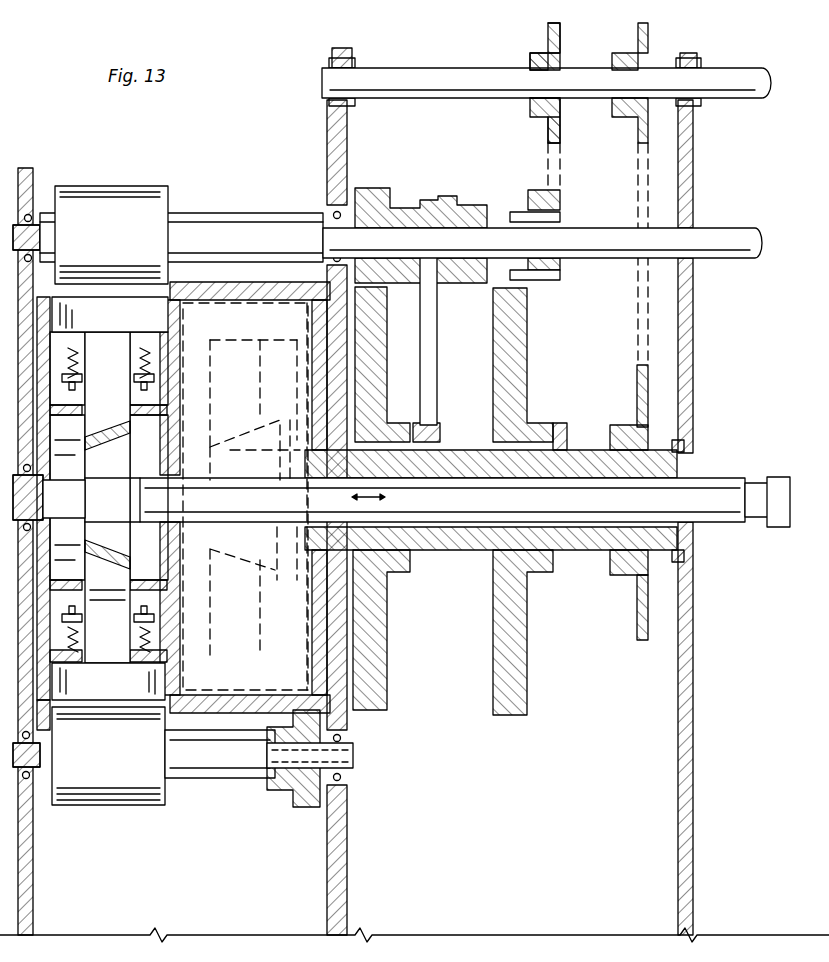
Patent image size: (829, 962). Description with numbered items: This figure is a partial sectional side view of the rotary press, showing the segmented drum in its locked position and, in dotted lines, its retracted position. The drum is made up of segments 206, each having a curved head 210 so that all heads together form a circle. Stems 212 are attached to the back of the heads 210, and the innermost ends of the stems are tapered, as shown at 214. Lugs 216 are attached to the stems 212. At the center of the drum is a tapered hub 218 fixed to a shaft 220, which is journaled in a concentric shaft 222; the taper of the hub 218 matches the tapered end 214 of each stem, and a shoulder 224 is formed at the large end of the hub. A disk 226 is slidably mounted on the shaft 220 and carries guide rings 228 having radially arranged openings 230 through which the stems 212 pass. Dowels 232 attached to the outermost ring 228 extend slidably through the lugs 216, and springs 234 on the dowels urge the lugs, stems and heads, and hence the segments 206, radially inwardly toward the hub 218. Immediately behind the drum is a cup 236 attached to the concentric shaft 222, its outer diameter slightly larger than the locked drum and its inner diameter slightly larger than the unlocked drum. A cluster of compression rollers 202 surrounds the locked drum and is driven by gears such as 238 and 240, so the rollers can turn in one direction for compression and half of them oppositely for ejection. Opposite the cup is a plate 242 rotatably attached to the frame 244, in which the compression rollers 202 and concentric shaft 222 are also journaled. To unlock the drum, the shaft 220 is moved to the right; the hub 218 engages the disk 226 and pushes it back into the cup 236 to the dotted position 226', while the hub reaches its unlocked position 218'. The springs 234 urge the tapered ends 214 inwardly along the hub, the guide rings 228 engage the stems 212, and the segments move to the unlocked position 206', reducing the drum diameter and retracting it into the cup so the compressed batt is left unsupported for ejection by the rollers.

The compression rollers 202 is at (150, 188).
The segments 206 is at (108, 681).
The unlocked position of segments 206' is at (245, 496).
The head 210 is at (100, 306).
The stems 212 is at (120, 372).
The tapered end 214 is at (100, 436).
The lugs 216 is at (165, 392).
The tapered hub 218 is at (91, 500).
The unlocked position of tapered hub 218' is at (255, 463).
The shaft 220 is at (483, 503).
The concentric shaft 222 is at (578, 452).
The shoulder 224 is at (132, 430).
The disk 226 is at (230, 445).
The unlocked position of disk 226' is at (280, 390).
The guide rings 228 is at (165, 600).
The openings 230 is at (140, 332).
The dowels 232 is at (165, 407).
The springs 234 is at (178, 356).
The cup 236 is at (243, 285).
The gear 238 is at (297, 812).
The gear 240 is at (372, 190).
The plate 242 is at (50, 712).
The frame 244 is at (35, 903).